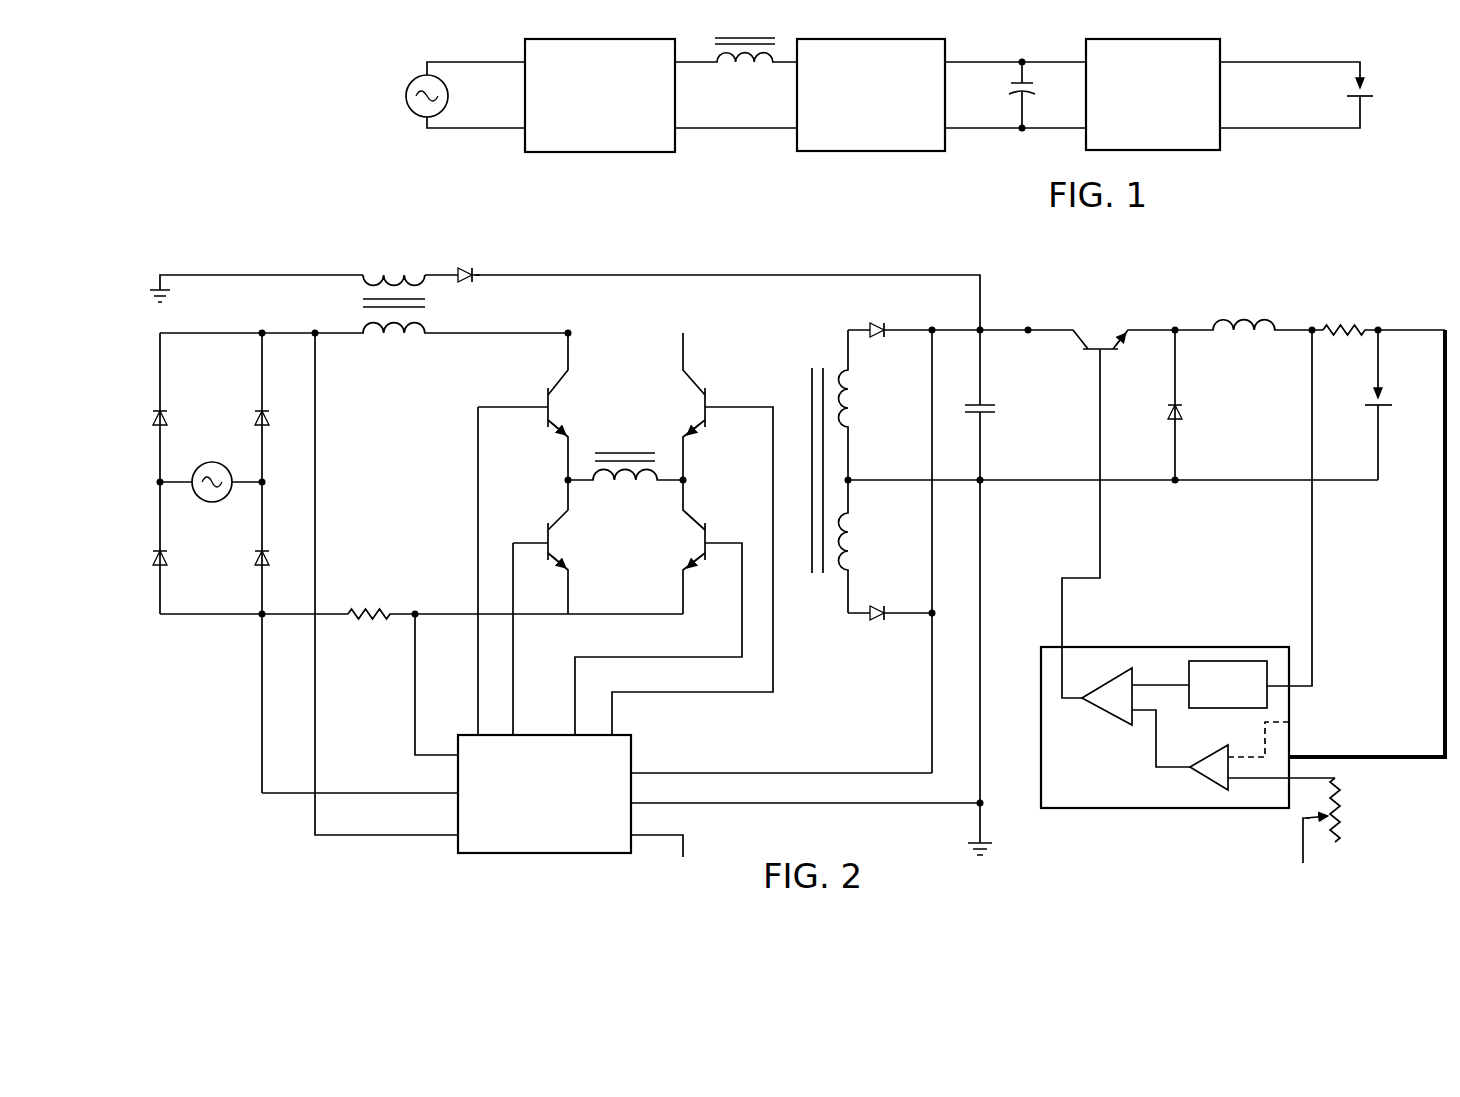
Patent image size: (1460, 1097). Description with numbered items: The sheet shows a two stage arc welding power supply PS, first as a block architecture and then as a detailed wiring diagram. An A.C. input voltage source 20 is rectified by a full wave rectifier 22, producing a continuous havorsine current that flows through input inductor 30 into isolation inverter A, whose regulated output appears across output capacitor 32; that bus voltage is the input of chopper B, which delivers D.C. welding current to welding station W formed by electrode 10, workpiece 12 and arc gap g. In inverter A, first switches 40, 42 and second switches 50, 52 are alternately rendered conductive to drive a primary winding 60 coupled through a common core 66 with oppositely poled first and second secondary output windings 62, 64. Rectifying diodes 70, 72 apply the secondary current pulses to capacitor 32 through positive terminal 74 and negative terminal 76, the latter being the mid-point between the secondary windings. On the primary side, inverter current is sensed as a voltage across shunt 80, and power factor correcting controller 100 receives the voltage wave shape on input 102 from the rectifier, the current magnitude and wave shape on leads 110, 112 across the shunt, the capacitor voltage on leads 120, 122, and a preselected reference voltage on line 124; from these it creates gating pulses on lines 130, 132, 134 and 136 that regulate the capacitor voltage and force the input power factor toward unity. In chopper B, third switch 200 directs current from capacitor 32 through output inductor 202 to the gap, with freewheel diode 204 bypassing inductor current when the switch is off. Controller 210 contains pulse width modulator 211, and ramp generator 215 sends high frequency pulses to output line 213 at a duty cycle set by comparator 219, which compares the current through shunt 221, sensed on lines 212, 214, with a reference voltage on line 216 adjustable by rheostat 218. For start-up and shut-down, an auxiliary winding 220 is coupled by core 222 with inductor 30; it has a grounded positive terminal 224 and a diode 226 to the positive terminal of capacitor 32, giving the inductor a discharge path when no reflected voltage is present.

In FIG. 1, the electrode 10 is at (1354, 84).
In FIG. 2, the electrode 10 is at (1374, 392).
In FIG. 1, the workpiece 12 is at (1369, 99).
In FIG. 2, the workpiece 12 is at (1386, 409).
In FIG. 1, the A.C. input voltage source 20 is at (407, 84).
In FIG. 2, the A.C. input voltage source 20 is at (209, 503).
In FIG. 1, the full wave rectifier 22 is at (524, 148).
In FIG. 2, the full wave rectifier 22 is at (281, 437).
In FIG. 1, the input inductor 30 is at (748, 66).
In FIG. 2, the input inductor 30 is at (398, 341).
In FIG. 1, the output capacitor 32 is at (1016, 100).
In FIG. 2, the output capacitor 32 is at (990, 405).
In FIG. 2, the first switch 40 is at (559, 405).
In FIG. 2, the first switch 42 is at (697, 543).
In FIG. 2, the second switch 50 is at (698, 372).
In FIG. 2, the second switch 52 is at (559, 548).
In FIG. 2, the primary winding 60 is at (657, 475).
In FIG. 2, the first secondary output winding 62 is at (852, 398).
In FIG. 2, the second secondary output winding 64 is at (852, 548).
In FIG. 2, the common core 66 is at (622, 452).
In FIG. 2, the rectifying diode 70 is at (877, 325).
In FIG. 2, the rectifying diode 72 is at (879, 620).
In FIG. 2, the positive terminal 74 is at (932, 328).
In FIG. 2, the negative terminal 76 is at (983, 478).
In FIG. 2, the shunt 80 is at (366, 608).
In FIG. 2, the power factor correcting controller 100 is at (637, 745).
In FIG. 2, the voltage wave shape input 102 is at (360, 836).
In FIG. 2, the lead 110 is at (415, 662).
In FIG. 2, the lead 112 is at (262, 686).
In FIG. 2, the lead 120 is at (765, 771).
In FIG. 2, the lead 122 is at (785, 803).
In FIG. 2, the reference voltage line 124 is at (690, 835).
In FIG. 2, the gating pulse line 130 is at (478, 490).
In FIG. 2, the gating pulse line 132 is at (668, 657).
In FIG. 2, the gating pulse line 134 is at (690, 692).
In FIG. 2, the gating pulse line 136 is at (513, 653).
In FIG. 2, the third switch 200 is at (1101, 341).
In FIG. 2, the output inductor 202 is at (1250, 338).
In FIG. 2, the freewheel diode 204 is at (1183, 415).
In FIG. 2, the controller 210 is at (1173, 644).
In FIG. 2, the pulse width modulator 211 is at (1110, 679).
In FIG. 2, the line 212 is at (1312, 563).
In FIG. 2, the output line 213 is at (1100, 568).
In FIG. 2, the line 214 is at (1441, 549).
In FIG. 2, the ramp generator 215 is at (1222, 660).
In FIG. 2, the reference current line 216 is at (1338, 782).
In FIG. 2, the rheostat 218 is at (1345, 823).
In FIG. 2, the comparator 219 is at (1212, 795).
In FIG. 2, the auxiliary winding 220 is at (396, 274).
In FIG. 2, the shunt 221 is at (1346, 322).
In FIG. 2, the core 222 is at (430, 300).
In FIG. 2, the grounded positive terminal 224 is at (212, 274).
In FIG. 2, the diode 226 is at (475, 272).
In FIG. 1, the inverter A is at (832, 153).
In FIG. 2, the inverter A is at (899, 259).
In FIG. 1, the chopper B is at (1210, 149).
In FIG. 2, the chopper B is at (1263, 300).
In FIG. 1, the power supply PS is at (758, 170).
In FIG. 2, the power supply PS is at (279, 230).
In FIG. 1, the welding station W is at (1367, 82).
In FIG. 2, the welding station W is at (1394, 400).
In FIG. 1, the arc gap g is at (1373, 92).
In FIG. 2, the arc gap g is at (1371, 403).